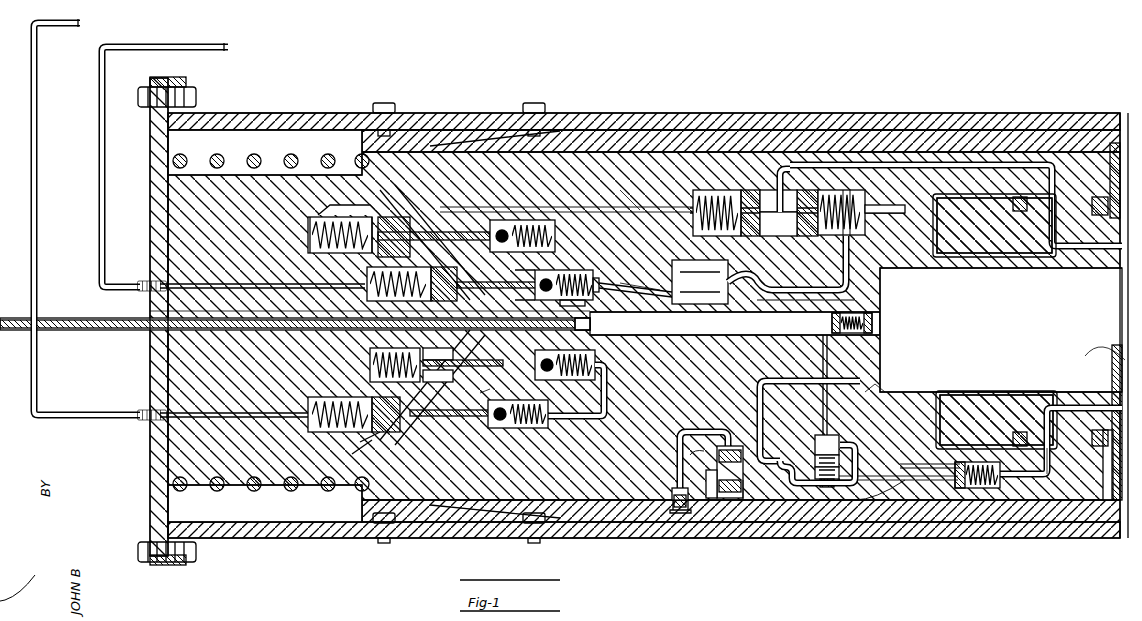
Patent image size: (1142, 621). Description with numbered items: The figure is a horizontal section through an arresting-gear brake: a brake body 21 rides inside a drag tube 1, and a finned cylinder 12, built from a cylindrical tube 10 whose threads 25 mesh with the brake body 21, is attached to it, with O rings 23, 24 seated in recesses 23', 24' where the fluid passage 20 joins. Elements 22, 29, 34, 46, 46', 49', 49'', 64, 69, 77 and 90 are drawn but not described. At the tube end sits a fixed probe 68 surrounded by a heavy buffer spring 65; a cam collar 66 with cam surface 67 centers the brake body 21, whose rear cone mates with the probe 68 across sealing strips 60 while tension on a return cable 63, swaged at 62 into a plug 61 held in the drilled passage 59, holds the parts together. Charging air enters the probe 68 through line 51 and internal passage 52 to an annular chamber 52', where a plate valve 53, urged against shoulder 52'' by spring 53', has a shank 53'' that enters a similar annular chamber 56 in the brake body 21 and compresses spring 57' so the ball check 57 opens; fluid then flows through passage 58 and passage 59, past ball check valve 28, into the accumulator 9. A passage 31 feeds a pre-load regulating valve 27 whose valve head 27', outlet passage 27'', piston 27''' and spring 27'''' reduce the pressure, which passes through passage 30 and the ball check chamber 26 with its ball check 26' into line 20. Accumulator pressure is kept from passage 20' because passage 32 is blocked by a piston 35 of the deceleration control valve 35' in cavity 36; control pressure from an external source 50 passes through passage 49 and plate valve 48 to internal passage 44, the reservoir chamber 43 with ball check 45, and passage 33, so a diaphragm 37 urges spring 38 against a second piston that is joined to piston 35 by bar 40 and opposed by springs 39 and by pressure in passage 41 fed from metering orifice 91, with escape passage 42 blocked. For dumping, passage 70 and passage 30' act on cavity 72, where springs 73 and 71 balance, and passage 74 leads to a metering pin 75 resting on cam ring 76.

The drag tube 1 is at (876, 114).
The accumulator 9 is at (1032, 328).
The cylindrical tube 10 is at (992, 376).
The finned cylinder 12 is at (1122, 153).
The fluid passage 20 is at (1061, 437).
The passage 20' is at (956, 188).
The brake body 21 is at (556, 132).
The passage 22 is at (1048, 473).
The O ring 23 is at (998, 342).
The recess 23' is at (996, 420).
The O ring 24 is at (1087, 342).
The recess 24' is at (1102, 402).
The threads 25 is at (888, 397).
The ball check chamber 26 is at (959, 510).
The ball check 26' is at (929, 460).
The pre-load regulating valve 27 is at (814, 443).
The valve head 27' is at (845, 437).
The outlet passage 27'' is at (852, 451).
The piston 27''' is at (897, 463).
The spring 27'''' is at (817, 498).
The ball check valve 28 is at (846, 334).
The block 29 is at (954, 236).
The passage 30 is at (873, 519).
The passage 30' is at (814, 449).
The passage 31 is at (832, 412).
The passage 32 is at (788, 292).
The passage 33 is at (824, 236).
The rod 34 is at (874, 200).
The piston 35 is at (776, 212).
The deceleration control valve 35' is at (762, 173).
The cavity 36 is at (760, 237).
The diaphragm 37 is at (858, 190).
The spring 38 is at (828, 190).
The springs 39 is at (704, 190).
The bar 40 is at (668, 208).
The passage 41 is at (634, 208).
The escape passage 42 is at (788, 164).
The control pressure reservoir chamber 43 is at (700, 264).
The internal passage 44 is at (636, 287).
The ball check 45 is at (580, 277).
The spring housing 46 is at (564, 267).
The housing end 46' is at (529, 276).
The plate valve 48 is at (418, 240).
The passage 49 is at (262, 267).
The spring 49' is at (386, 309).
The spring 49'' is at (436, 377).
The external source 50 is at (108, 186).
The line 51 is at (64, 410).
The internal passage 52 is at (234, 400).
The annular chamber 52' is at (334, 349).
The shoulder 52'' is at (370, 446).
The plate valve 53 is at (354, 404).
The spring 53' is at (322, 434).
The shank 53'' is at (501, 391).
The annular chamber 56 is at (495, 258).
The ball check 57 is at (542, 286).
The spring 57' is at (525, 427).
The passage 58 is at (604, 376).
The drilled passage 59 is at (656, 333).
The sealing strips 60 is at (410, 178).
The plug 61 is at (618, 288).
The swaging 62 is at (579, 302).
The return cable 63 is at (132, 302).
The bore 64 is at (283, 316).
The buffer spring 65 is at (256, 156).
The cam collar 66 is at (516, 115).
The cam surface 67 is at (468, 121).
The fixed probe 68 is at (152, 501).
The bolt 69 is at (148, 546).
The passage 70 is at (796, 366).
The spring 71 is at (743, 499).
The cavity 72 is at (710, 499).
The spring 73 is at (733, 449).
The passage 74 is at (696, 427).
The metering pin 75 is at (670, 515).
The cam ring 76 is at (695, 113).
The passage 77 is at (698, 444).
The cap 90 is at (372, 203).
The metering orifice 91 is at (444, 207).